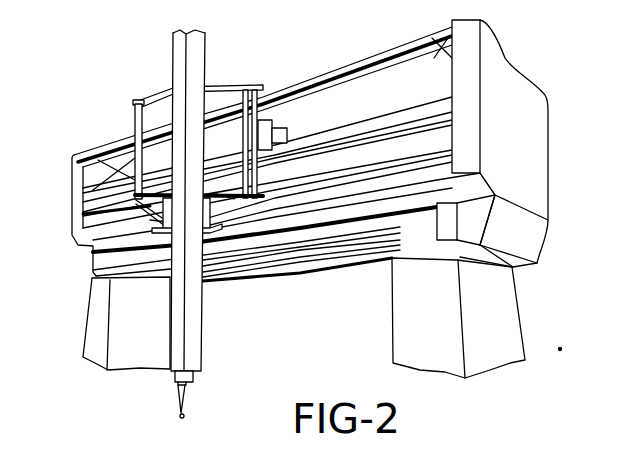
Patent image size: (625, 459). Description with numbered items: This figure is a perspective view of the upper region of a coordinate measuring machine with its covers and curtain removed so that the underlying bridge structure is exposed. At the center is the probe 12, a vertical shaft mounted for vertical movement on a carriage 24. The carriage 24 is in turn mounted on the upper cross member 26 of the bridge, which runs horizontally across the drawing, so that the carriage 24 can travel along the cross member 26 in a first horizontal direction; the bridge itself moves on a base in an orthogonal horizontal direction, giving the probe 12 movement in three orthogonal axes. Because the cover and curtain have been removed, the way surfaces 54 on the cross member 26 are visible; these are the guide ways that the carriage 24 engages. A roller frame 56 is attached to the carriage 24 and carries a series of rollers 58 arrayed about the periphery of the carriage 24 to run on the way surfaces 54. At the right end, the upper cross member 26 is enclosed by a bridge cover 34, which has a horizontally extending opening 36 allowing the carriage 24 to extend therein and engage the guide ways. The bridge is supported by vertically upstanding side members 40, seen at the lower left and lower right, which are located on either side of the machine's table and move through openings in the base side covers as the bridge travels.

The probe 12 is at (241, 327).
The carriage 24 is at (196, 211).
The upper cross member 26 is at (352, 163).
The bridge cover 34 is at (530, 129).
The horizontally extending opening 36 is at (406, 161).
The side members 40 is at (146, 322).
The way surfaces 54 is at (378, 122).
The roller frame 56 is at (222, 195).
The rollers 58 is at (137, 128).